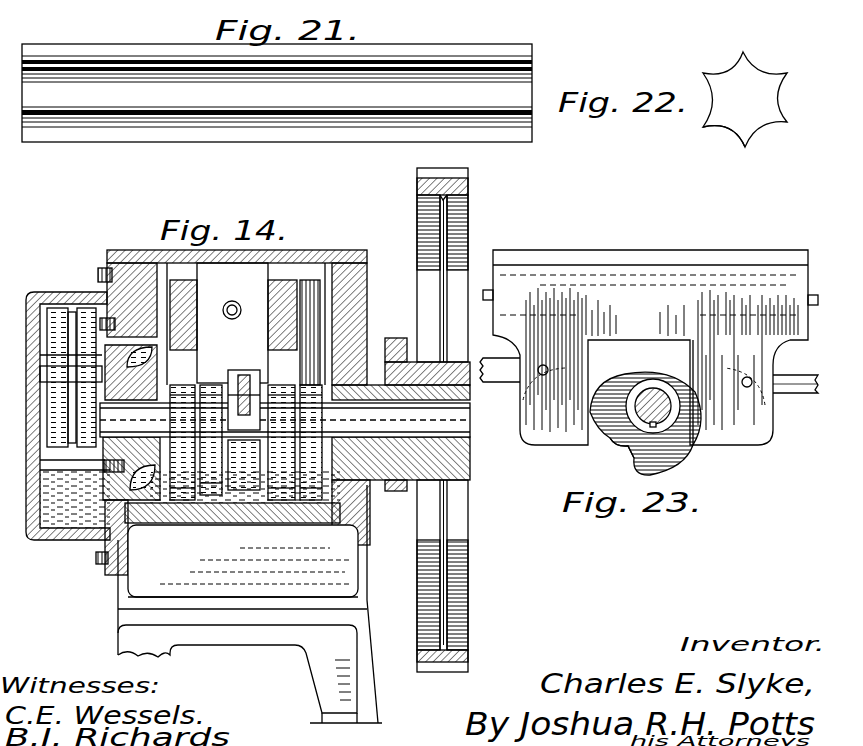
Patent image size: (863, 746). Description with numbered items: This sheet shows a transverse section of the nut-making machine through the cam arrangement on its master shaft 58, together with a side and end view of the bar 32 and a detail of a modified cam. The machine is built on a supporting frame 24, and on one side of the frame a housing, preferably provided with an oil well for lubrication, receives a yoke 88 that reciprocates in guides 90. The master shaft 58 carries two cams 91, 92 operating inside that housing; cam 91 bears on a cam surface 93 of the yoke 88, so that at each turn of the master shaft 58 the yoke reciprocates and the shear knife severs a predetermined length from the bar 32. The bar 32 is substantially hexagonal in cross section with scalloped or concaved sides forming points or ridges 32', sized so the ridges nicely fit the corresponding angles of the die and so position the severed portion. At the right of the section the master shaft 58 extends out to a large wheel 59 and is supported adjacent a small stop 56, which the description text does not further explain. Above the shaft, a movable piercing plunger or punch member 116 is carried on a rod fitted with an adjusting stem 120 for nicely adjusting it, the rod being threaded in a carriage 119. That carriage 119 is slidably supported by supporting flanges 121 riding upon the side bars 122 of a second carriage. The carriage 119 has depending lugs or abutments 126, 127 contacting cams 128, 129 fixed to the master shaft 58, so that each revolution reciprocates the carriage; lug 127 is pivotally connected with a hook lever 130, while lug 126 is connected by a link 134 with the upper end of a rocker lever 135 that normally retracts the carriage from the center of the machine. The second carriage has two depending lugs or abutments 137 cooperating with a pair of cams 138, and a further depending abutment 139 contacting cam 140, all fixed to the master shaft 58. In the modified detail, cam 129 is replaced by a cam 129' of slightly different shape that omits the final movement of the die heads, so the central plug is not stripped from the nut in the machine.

In FIG. 14, the supporting frame 24 is at (135, 262).
In FIG. 21, the bar 32 is at (277, 81).
In FIG. 22, the bar 32 is at (745, 103).
In FIG. 22, the points or ridges 32' is at (717, 148).
In FIG. 14, the stop 56 is at (396, 491).
In FIG. 14, the master shaft 58 is at (285, 420).
In FIG. 23, the master shaft 58 is at (653, 390).
In FIG. 14, the hand wheel 59 is at (420, 183).
In FIG. 14, the yoke 88 is at (40, 378).
In FIG. 14, the guides 90 is at (40, 331).
In FIG. 14, the cam 91 is at (63, 292).
In FIG. 14, the cam 92 is at (85, 377).
In FIG. 14, the cam surface 93 is at (40, 357).
In FIG. 14, the piercing plunger or punch member 116 is at (240, 316).
In FIG. 14, the carriage 119 is at (232, 323).
In FIG. 23, the carriage 119 is at (630, 295).
In FIG. 23, the adjusting stem 120 is at (488, 290).
In FIG. 14, the supporting flanges 121 is at (180, 288).
In FIG. 23, the supporting flanges 121 is at (722, 264).
In FIG. 14, the side bars 122 is at (277, 285).
In FIG. 14, the depending lug or abutment 126 is at (210, 388).
In FIG. 23, the depending lug or abutment 126 is at (545, 397).
In FIG. 14, the depending lug or abutment 127 is at (240, 368).
In FIG. 23, the depending lug or abutment 127 is at (736, 399).
In FIG. 14, the cam 128 is at (247, 498).
In FIG. 23, the cam 128 is at (675, 465).
In FIG. 14, the cam 129 is at (206, 468).
In FIG. 23, the cam 129' is at (594, 453).
In FIG. 14, the hook lever 130 is at (236, 402).
In FIG. 23, the hook lever 130 is at (800, 388).
In FIG. 23, the link 134 is at (508, 372).
In FIG. 14, the rocker lever 135 is at (178, 500).
In FIG. 14, the depending lugs or abutments 137 is at (182, 372).
In FIG. 14, the cams 138 is at (270, 530).
In FIG. 14, the depending abutment 139 is at (302, 340).
In FIG. 14, the cam 140 is at (308, 503).